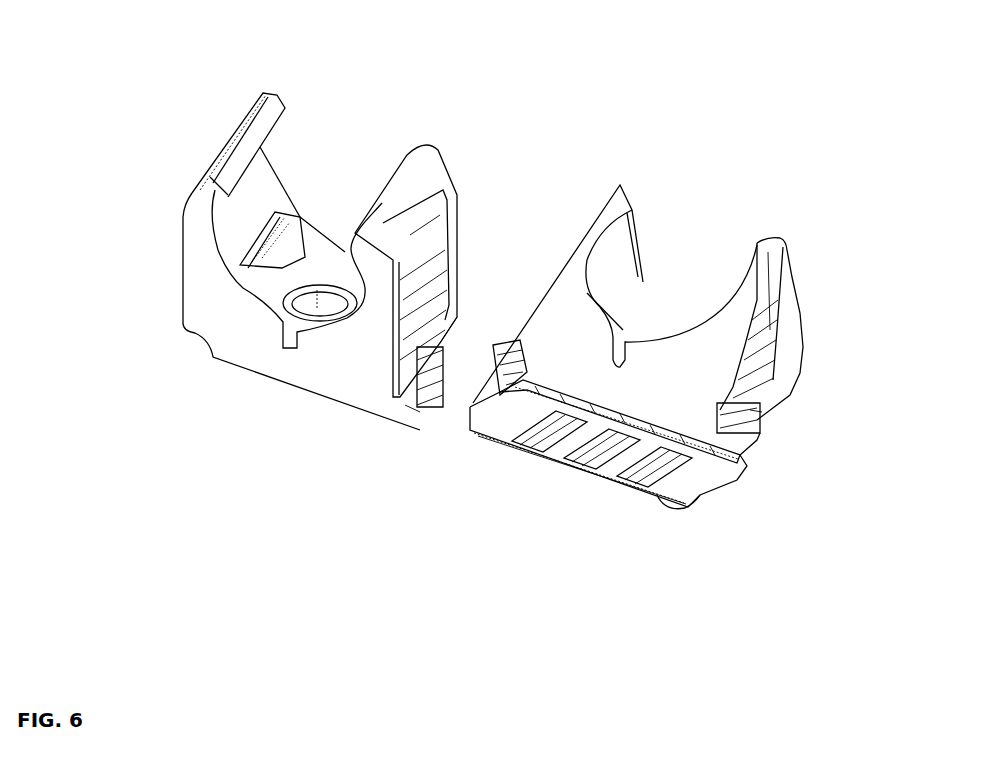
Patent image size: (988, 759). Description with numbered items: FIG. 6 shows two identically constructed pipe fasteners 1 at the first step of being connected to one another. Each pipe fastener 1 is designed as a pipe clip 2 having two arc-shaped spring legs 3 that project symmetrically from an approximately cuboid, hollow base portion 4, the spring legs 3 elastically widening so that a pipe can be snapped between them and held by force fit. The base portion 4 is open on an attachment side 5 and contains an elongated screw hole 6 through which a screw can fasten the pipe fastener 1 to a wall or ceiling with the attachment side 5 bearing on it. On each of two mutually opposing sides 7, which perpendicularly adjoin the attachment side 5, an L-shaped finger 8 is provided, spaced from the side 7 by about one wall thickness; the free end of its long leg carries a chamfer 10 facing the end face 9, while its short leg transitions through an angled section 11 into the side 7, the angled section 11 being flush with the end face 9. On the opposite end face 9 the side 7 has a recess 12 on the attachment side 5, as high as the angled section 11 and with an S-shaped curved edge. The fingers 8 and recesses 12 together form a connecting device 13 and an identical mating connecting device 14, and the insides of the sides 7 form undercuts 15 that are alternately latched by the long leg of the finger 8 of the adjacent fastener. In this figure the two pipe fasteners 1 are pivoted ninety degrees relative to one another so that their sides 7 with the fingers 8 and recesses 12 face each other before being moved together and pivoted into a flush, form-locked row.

The pipe fastener 1 is at (496, 310).
The pipe clip 2 is at (504, 351).
The spring legs 3 is at (398, 188).
The base portion 4 is at (298, 377).
The attachment side 5 is at (313, 403).
The screw hole 6 is at (326, 306).
The sides 7 is at (413, 358).
The finger 8 is at (666, 447).
The end face 9 is at (223, 310).
The chamfer 10 is at (757, 413).
The angled section 11 is at (410, 418).
The recess 12 is at (193, 347).
The connecting device 13 is at (720, 433).
The mating connecting device 14 is at (492, 354).
The undercuts 15 is at (723, 493).